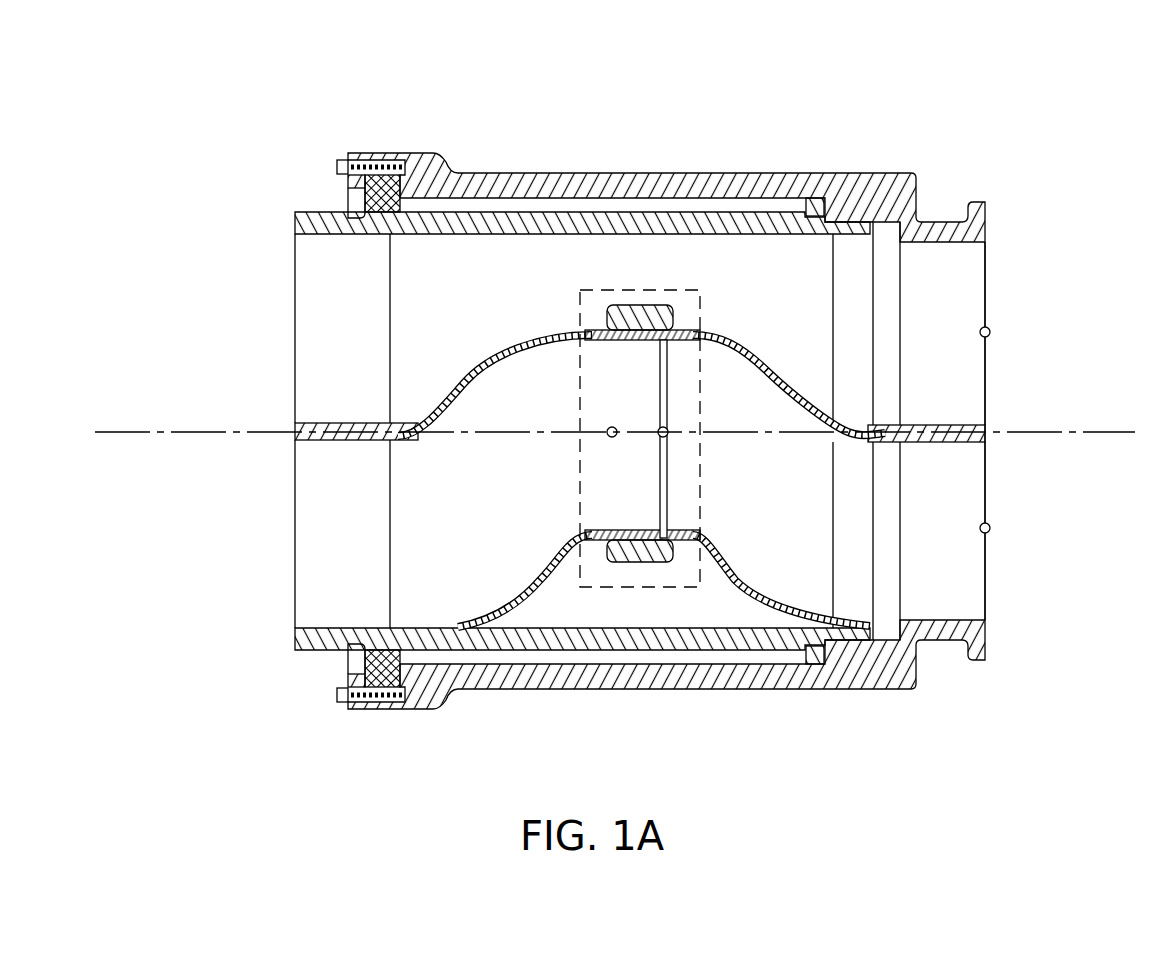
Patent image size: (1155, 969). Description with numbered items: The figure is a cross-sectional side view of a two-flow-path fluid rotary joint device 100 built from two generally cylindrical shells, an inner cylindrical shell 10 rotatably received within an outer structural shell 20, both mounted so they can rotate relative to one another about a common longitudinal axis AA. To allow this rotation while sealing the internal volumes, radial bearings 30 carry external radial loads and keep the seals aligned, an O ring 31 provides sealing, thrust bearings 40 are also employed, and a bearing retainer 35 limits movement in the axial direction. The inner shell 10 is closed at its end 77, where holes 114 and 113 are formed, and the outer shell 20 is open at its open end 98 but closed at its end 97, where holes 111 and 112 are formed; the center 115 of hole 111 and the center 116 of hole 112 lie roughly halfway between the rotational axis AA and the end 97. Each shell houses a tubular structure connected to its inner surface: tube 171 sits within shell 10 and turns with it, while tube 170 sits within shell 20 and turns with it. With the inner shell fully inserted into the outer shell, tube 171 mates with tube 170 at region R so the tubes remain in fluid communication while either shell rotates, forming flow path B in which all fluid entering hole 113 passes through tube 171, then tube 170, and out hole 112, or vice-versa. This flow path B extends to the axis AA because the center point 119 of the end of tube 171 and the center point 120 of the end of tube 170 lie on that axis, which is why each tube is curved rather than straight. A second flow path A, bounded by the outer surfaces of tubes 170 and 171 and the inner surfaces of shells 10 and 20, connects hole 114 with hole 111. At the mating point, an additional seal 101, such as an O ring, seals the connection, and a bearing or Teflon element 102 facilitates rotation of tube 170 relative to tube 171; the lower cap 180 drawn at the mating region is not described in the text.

The joint device 100 is at (1000, 112).
The cylindrical shell 10 is at (590, 652).
The outer structural shell 20 is at (783, 690).
The radial bearings 30 is at (823, 198).
The O ring 31 is at (850, 223).
The bearing retainer 35 is at (350, 186).
The thrust bearings 40 is at (436, 163).
The open end of shell 20 98 is at (411, 157).
The closed end of shell 10 77 is at (295, 372).
The closed end of shell 20 97 is at (985, 582).
The seal 101 is at (662, 322).
The bearing or Teflon 102 is at (612, 333).
The hole 111 is at (978, 270).
The hole 112 is at (978, 478).
The hole 113 is at (298, 583).
The hole 114 is at (320, 295).
The center of hole 111 115 is at (990, 332).
The center of hole 112 116 is at (990, 528).
The center point of end of tube 171 119 is at (668, 428).
The center point of end of tube 170 120 is at (613, 428).
The tubular structure 170 is at (765, 348).
The tubular structure 171 is at (478, 370).
The lower cap 180 is at (621, 528).
The region R is at (660, 587).
The second flow path A is at (855, 280).
The flow path B is at (914, 547).
The longitudinal axis AA is at (185, 433).